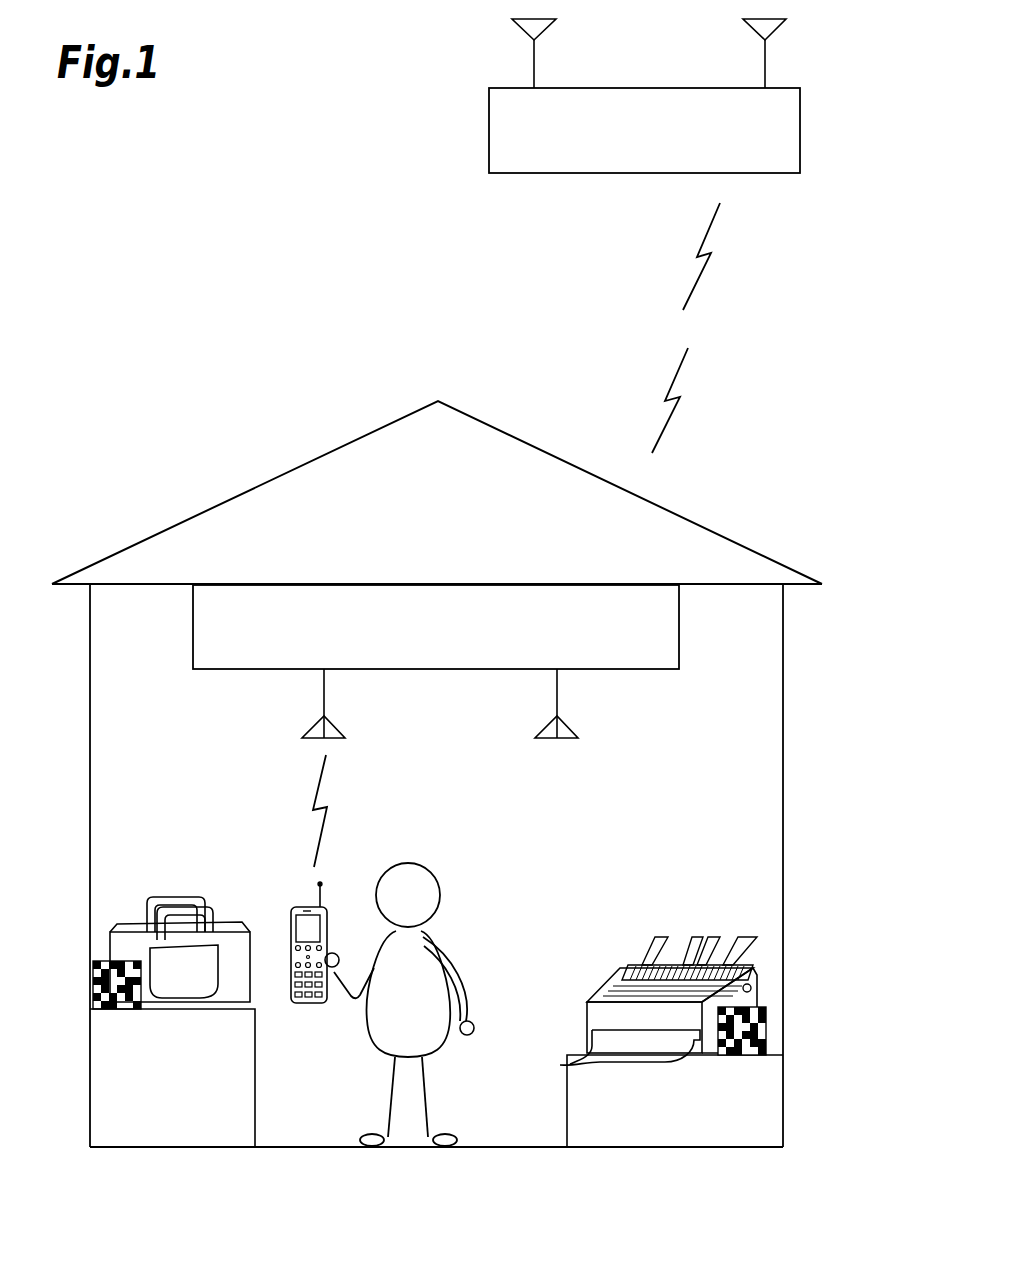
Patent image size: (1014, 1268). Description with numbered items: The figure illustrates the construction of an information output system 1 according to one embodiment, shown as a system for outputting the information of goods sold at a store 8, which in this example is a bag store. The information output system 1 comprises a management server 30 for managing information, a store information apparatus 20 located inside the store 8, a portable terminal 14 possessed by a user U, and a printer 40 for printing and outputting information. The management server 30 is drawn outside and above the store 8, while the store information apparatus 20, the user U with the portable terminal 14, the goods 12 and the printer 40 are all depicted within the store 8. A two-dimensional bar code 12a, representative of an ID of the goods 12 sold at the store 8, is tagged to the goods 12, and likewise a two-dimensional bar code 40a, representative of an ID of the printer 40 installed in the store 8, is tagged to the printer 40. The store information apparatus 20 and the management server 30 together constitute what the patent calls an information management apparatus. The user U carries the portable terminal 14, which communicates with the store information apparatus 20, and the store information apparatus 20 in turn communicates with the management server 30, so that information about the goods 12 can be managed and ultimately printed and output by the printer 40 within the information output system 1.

The information output system 1 is at (218, 343).
The store 8 is at (543, 450).
The goods 12 is at (178, 897).
The two-dimensional bar code 12a is at (117, 1011).
The portable terminal 14 is at (302, 907).
The store information apparatus 20 is at (440, 584).
The management server 30 is at (648, 88).
The printer 40 is at (641, 963).
The two-dimensional bar code 40a is at (742, 1056).
The user U is at (443, 1038).